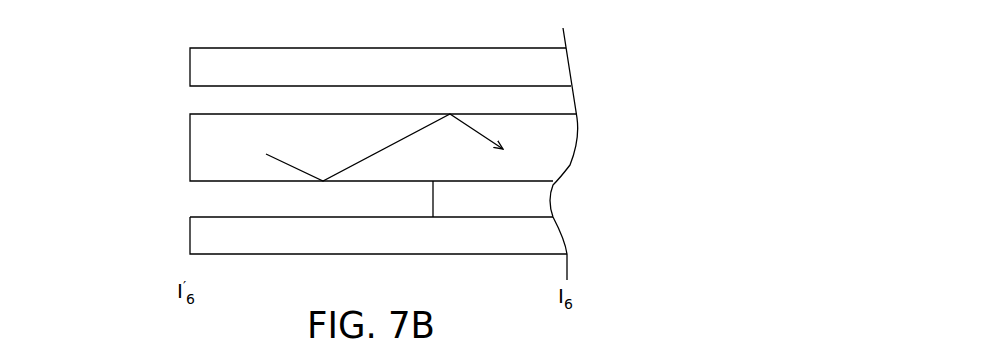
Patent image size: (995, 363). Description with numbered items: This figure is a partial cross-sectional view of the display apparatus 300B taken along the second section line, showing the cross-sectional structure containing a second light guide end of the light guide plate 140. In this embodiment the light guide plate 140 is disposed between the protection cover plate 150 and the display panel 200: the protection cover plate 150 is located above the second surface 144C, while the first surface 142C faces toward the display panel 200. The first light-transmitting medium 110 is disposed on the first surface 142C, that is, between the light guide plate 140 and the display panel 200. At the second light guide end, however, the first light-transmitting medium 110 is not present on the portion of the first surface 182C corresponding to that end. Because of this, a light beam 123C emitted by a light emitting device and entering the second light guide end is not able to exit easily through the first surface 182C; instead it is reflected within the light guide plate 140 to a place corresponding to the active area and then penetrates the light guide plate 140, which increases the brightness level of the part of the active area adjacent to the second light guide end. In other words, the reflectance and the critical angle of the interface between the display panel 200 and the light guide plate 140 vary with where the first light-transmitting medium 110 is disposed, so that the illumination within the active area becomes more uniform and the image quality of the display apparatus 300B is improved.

The display apparatus 300B is at (679, 307).
The protection cover plate 150 is at (537, 66).
The light guide plate 140 is at (537, 150).
The first light-transmitting medium 110 is at (537, 201).
The display panel 200 is at (547, 243).
The second surface 144C is at (292, 113).
The light beam 123C is at (482, 132).
The first surface 182C is at (287, 183).
The first surface 142C is at (517, 184).